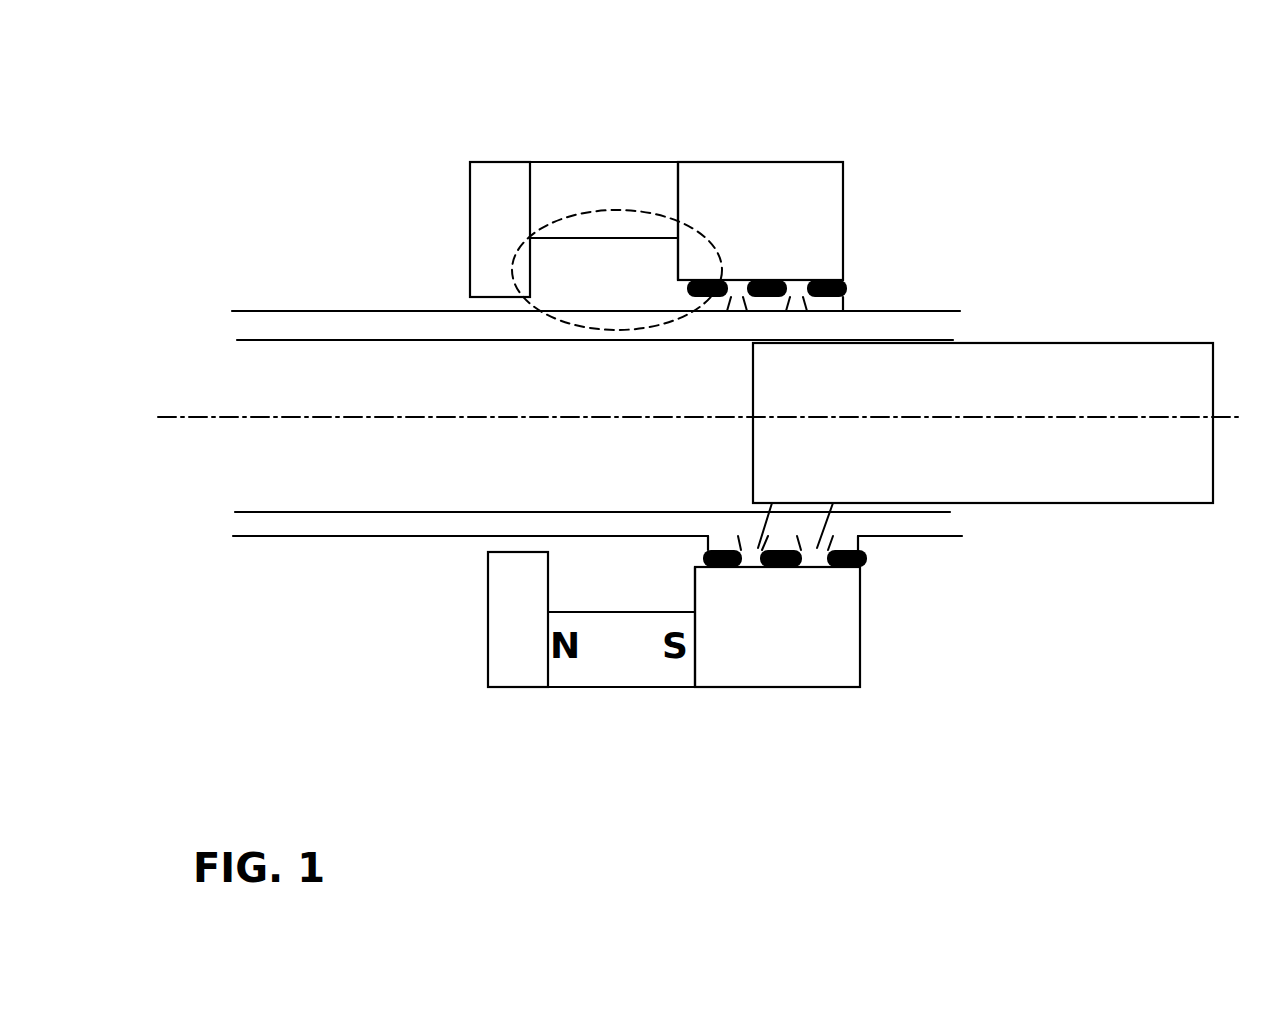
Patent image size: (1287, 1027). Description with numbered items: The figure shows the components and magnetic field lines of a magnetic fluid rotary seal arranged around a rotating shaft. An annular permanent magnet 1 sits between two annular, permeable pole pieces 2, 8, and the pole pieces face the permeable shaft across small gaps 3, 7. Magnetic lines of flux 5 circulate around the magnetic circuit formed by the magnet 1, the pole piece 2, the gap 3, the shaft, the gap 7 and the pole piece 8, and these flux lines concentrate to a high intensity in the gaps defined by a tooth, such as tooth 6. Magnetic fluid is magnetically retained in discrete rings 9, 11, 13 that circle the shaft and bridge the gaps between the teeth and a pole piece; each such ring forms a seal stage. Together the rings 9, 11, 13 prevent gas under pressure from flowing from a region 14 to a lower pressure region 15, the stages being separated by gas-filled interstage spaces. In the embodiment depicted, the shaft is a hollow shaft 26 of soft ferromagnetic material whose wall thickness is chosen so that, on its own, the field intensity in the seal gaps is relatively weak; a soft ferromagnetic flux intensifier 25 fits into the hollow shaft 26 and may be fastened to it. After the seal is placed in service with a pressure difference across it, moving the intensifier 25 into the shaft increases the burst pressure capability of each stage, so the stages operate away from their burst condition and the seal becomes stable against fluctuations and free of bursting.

The permanent magnet 1 is at (801, 303).
The pole piece 2 is at (468, 205).
The gap 3 is at (745, 300).
The magnetic lines of flux 5 is at (590, 178).
The tooth 6 is at (843, 302).
The gap 7 is at (803, 305).
The pole piece 8 is at (767, 162).
The ring of magnetic fluid 9 is at (867, 560).
The ring of magnetic fluid 11 is at (793, 567).
The ring of magnetic fluid 13 is at (727, 567).
The region 14 is at (441, 619).
The lower pressure region 15 is at (1087, 207).
The flux intensifier 25 is at (1093, 343).
The hollow shaft 26 is at (322, 311).